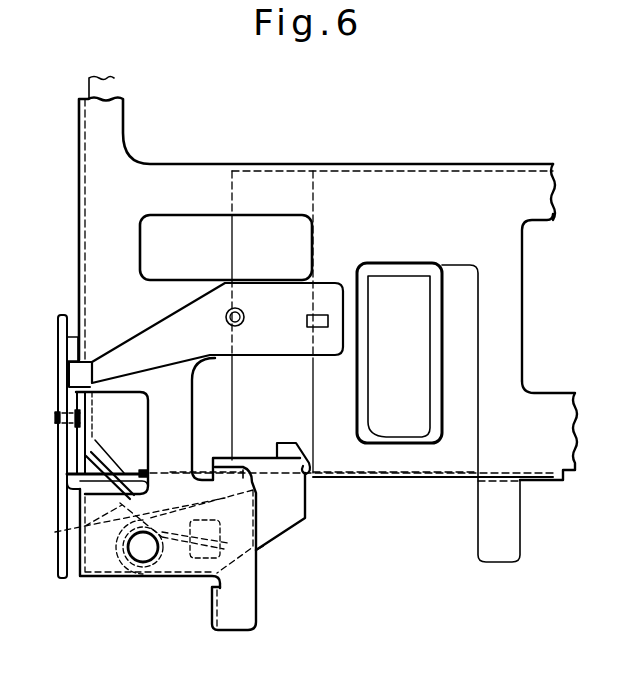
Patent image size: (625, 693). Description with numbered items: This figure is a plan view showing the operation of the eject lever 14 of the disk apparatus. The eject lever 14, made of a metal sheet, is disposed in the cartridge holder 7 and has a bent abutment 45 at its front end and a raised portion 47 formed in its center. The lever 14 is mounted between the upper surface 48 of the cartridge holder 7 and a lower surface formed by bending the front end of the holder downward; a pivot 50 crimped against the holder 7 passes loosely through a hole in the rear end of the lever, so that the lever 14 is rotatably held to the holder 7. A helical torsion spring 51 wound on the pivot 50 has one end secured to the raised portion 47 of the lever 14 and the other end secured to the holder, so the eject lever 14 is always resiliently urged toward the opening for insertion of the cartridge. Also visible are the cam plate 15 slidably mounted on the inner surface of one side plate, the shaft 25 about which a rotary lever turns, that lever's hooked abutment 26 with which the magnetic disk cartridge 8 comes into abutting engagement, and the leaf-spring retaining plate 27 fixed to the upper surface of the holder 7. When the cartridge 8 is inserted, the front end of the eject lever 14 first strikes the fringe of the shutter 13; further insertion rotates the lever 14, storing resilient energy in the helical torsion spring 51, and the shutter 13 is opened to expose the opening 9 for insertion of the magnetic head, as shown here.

The cartridge holder 7 is at (177, 165).
The magnetic disk cartridge 8 is at (113, 427).
The opening 9 is at (430, 336).
The shutter 13 is at (455, 462).
The eject lever 14 is at (298, 528).
The cam plate 15 is at (58, 336).
The shaft 25 is at (55, 418).
The abutment 26 is at (77, 488).
The retaining plate 27 is at (145, 335).
The bent abutment 45 is at (313, 472).
The raised portion 47 is at (263, 548).
The upper surface 48 is at (102, 570).
The pivot 50 is at (145, 553).
The helical torsion spring 51 is at (55, 532).